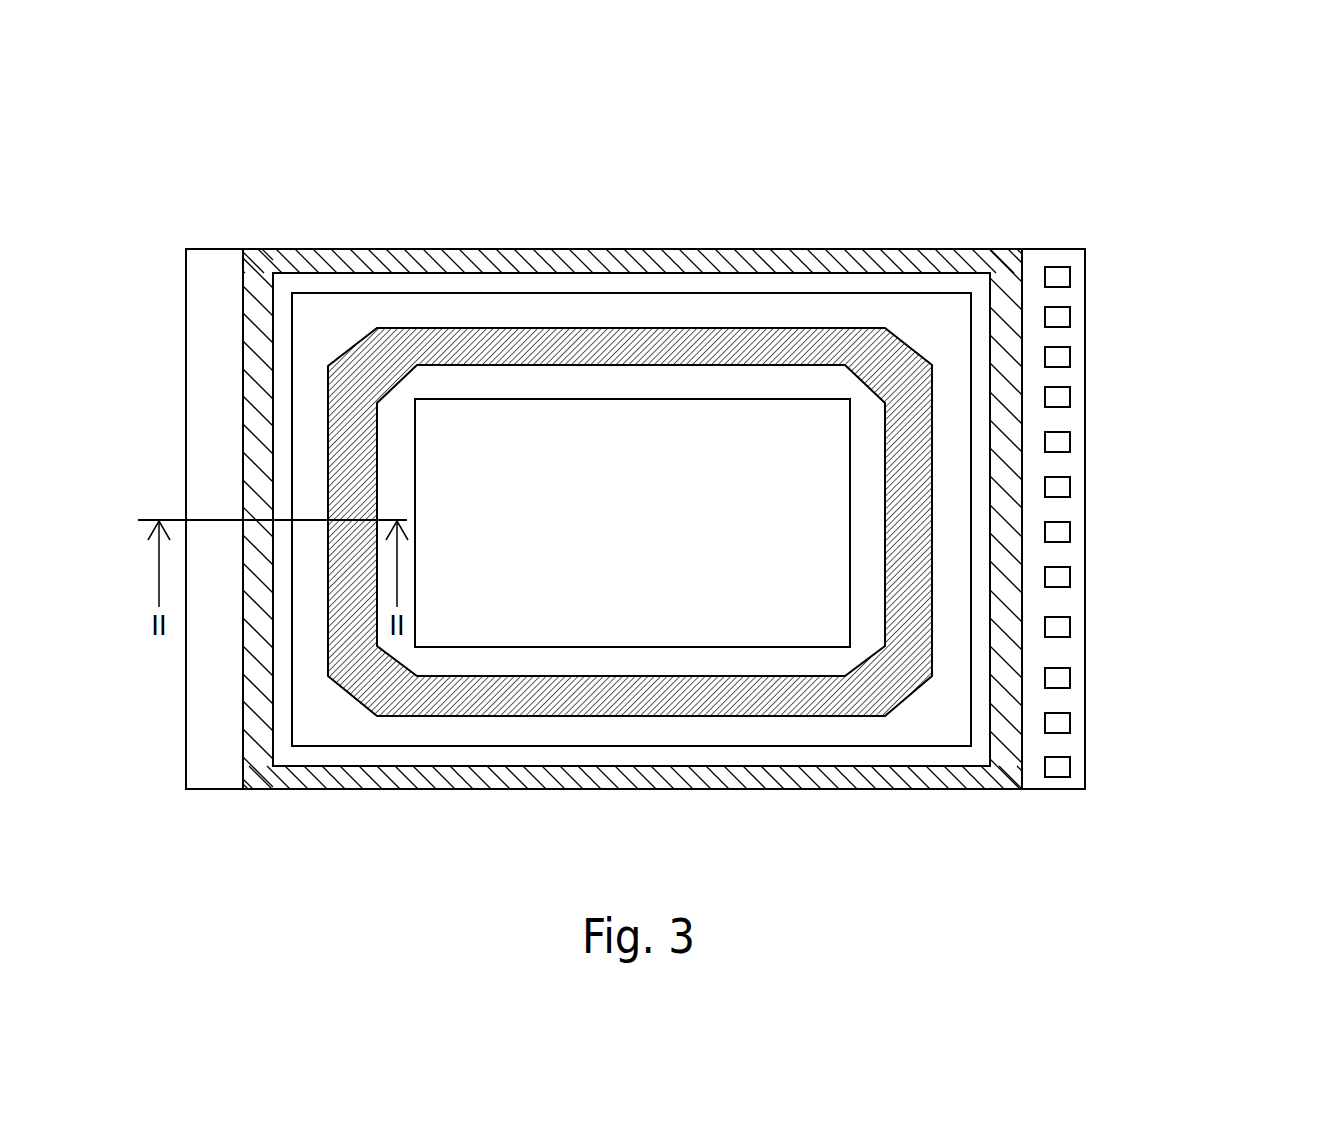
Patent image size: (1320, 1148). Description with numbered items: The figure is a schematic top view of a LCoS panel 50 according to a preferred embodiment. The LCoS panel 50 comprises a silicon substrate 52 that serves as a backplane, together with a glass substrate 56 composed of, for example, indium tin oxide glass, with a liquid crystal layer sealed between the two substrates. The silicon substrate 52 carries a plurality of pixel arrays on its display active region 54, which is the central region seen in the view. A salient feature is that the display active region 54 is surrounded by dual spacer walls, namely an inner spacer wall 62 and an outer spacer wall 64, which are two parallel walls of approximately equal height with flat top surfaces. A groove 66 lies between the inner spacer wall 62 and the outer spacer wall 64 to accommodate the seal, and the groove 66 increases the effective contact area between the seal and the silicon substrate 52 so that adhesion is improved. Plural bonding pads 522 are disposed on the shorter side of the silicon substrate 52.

The LCoS panel 50 is at (1143, 165).
The silicon substrate 52 is at (1082, 341).
The bonding pads 522 is at (1063, 277).
The display active region 54 is at (655, 540).
The glass substrate 56 is at (212, 260).
The inner spacer wall 62 is at (590, 353).
The outer spacer wall 64 is at (652, 278).
The groove 66 is at (951, 333).